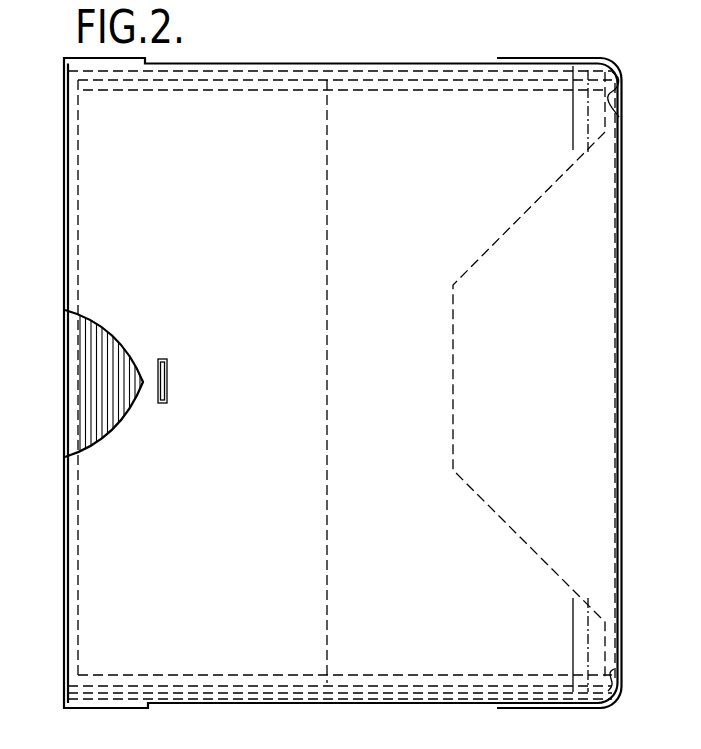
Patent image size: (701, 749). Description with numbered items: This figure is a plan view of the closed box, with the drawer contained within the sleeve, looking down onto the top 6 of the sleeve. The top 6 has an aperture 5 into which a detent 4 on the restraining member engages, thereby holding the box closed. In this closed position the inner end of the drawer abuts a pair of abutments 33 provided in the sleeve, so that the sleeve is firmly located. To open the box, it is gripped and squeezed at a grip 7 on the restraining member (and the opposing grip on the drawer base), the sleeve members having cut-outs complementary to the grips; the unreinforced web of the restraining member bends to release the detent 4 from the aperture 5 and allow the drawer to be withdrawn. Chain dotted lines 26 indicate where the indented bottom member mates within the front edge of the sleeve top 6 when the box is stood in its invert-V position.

The detent 4 is at (167, 372).
The aperture 5 is at (167, 390).
The top 6 is at (147, 229).
The grip 7 is at (112, 393).
The chain dotted lines 26 is at (573, 108).
The abutments 33 is at (619, 117).